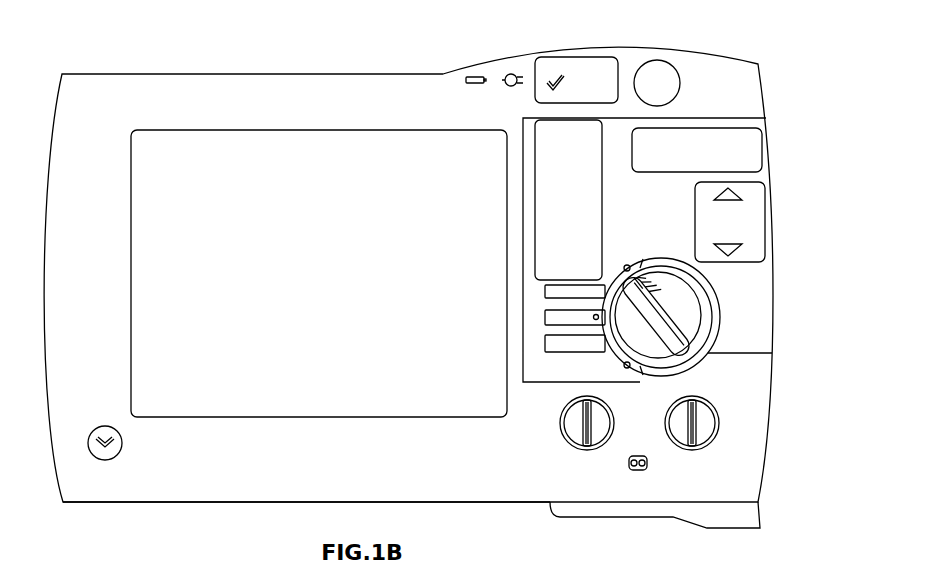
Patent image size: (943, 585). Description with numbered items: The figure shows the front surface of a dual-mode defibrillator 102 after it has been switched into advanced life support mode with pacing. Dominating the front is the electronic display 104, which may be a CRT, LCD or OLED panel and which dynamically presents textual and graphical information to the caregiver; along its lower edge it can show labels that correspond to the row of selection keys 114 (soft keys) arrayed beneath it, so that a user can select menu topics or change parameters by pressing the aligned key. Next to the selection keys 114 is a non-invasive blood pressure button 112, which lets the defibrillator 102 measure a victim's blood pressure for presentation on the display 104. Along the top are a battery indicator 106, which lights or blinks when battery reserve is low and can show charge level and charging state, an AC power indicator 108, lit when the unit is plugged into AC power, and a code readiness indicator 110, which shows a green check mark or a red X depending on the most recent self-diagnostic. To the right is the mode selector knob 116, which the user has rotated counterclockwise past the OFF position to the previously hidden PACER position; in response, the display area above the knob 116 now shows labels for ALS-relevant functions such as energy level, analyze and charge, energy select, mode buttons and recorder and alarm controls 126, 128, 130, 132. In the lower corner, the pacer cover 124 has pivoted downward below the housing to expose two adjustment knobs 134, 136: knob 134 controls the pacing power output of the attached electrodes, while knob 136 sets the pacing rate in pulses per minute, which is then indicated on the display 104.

The dual-mode defibrillator 102 is at (212, 73).
The electronic display 104 is at (284, 155).
The battery indicator 106 is at (477, 77).
The AC power indicator 108 is at (512, 74).
The code readiness indicator 110 is at (597, 68).
The non-invasive blood pressure button 112 is at (97, 458).
The selection keys 114 is at (202, 488).
The mode selector knob 116 is at (700, 318).
The pacer cover 124 is at (750, 515).
The mode buttons 126 is at (545, 292).
The control panel 128 is at (603, 132).
The analyze and charge buttons 130 is at (758, 152).
The energy select button 132 is at (752, 220).
The output adjustment knob 134 is at (560, 422).
The rate adjustment knob 136 is at (720, 428).